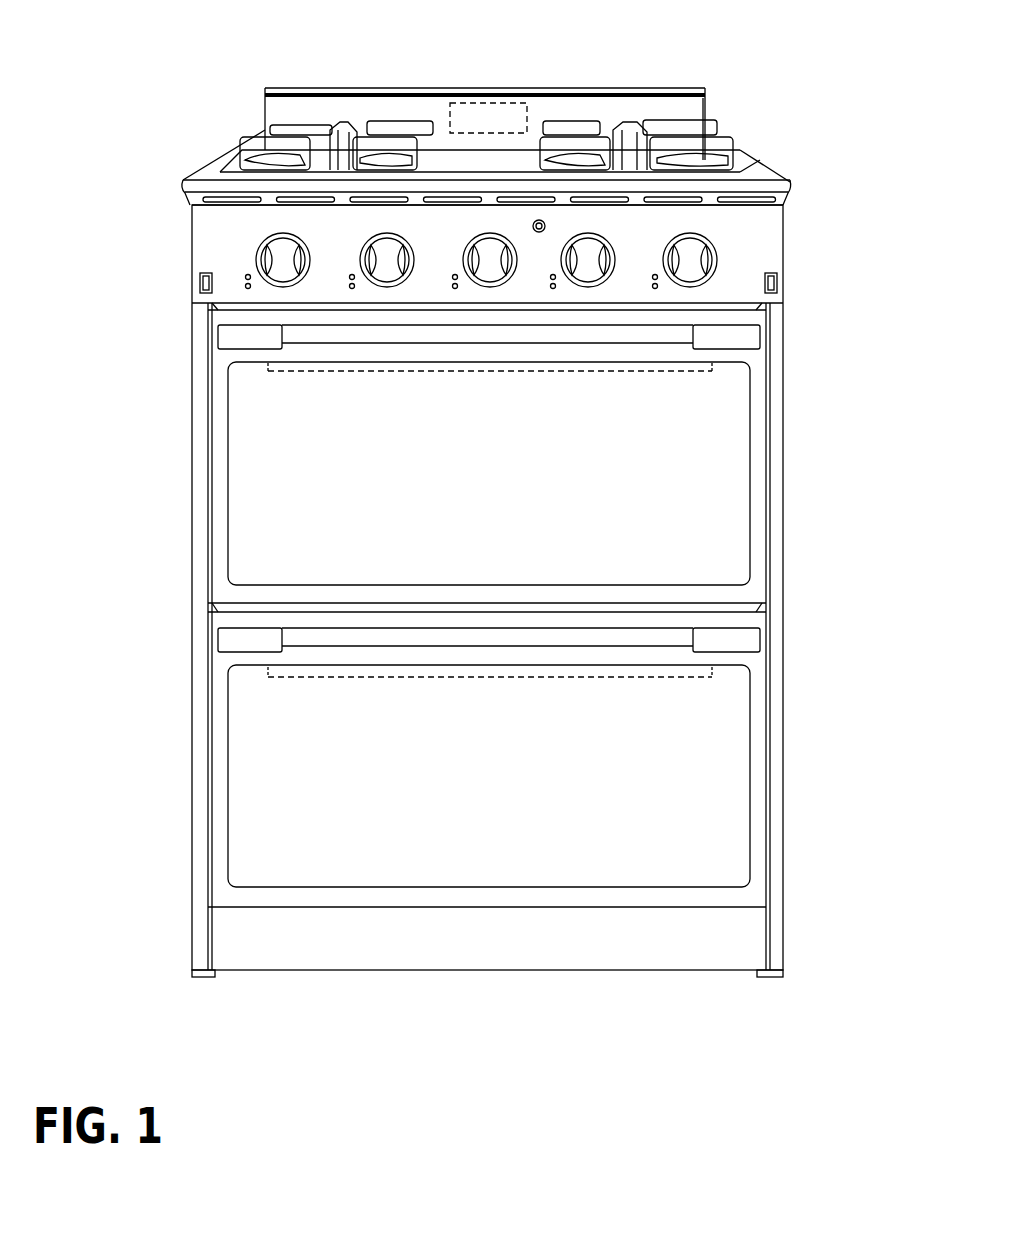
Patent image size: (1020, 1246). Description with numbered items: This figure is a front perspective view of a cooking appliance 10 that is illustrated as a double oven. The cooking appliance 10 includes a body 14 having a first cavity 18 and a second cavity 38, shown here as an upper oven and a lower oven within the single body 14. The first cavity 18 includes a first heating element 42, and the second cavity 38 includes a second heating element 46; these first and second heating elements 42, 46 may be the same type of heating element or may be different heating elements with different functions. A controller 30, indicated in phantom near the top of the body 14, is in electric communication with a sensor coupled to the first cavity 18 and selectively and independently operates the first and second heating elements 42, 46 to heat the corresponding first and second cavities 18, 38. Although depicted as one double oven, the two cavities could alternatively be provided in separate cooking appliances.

The cooking appliance 10 is at (773, 102).
The body 14 is at (785, 258).
The first cavity 18 is at (693, 480).
The controller 30 is at (493, 100).
The second cavity 38 is at (692, 757).
The first heating element 42 is at (296, 377).
The second heating element 46 is at (300, 682).